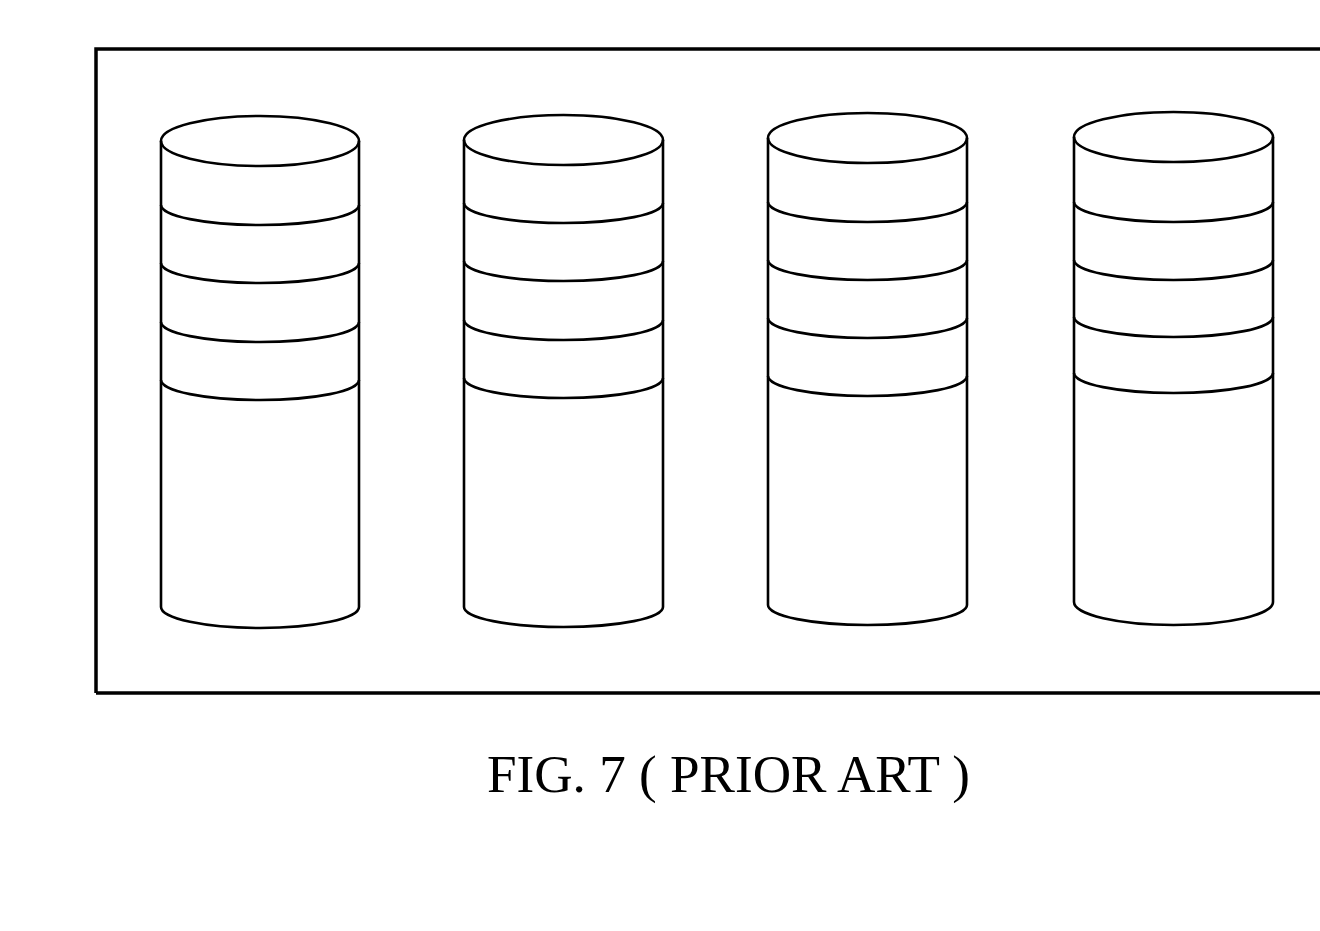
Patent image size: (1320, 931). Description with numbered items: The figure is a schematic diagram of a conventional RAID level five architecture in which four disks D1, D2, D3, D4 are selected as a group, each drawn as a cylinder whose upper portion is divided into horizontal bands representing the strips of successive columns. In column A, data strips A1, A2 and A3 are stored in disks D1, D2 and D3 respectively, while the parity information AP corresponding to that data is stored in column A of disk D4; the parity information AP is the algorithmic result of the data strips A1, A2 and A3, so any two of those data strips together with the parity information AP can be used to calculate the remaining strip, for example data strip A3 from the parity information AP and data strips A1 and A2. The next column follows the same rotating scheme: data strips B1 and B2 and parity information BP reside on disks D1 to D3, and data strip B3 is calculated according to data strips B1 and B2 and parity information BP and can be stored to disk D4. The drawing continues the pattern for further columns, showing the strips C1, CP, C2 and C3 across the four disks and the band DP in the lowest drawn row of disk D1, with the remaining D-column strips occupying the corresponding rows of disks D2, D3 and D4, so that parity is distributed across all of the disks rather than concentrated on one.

The disk D1 is at (260, 397).
The disk D2 is at (563, 396).
The disk D3 is at (867, 394).
The disk D4 is at (1173, 393).
The data strip A1 is at (260, 202).
The data strip A2 is at (563, 200).
The data strip A3 is at (867, 199).
The parity information AP is at (1173, 199).
The data strip B1 is at (260, 260).
The data strip B2 is at (563, 258).
The data strip B3 is at (1173, 257).
The parity information BP is at (867, 257).
The stripe C data block 1 C1 is at (260, 319).
The stripe C data block 2 C2 is at (867, 315).
The stripe C data block 3 C3 is at (1173, 314).
The stripe C parity block CP is at (563, 317).
The stripe D parity block DP is at (260, 377).